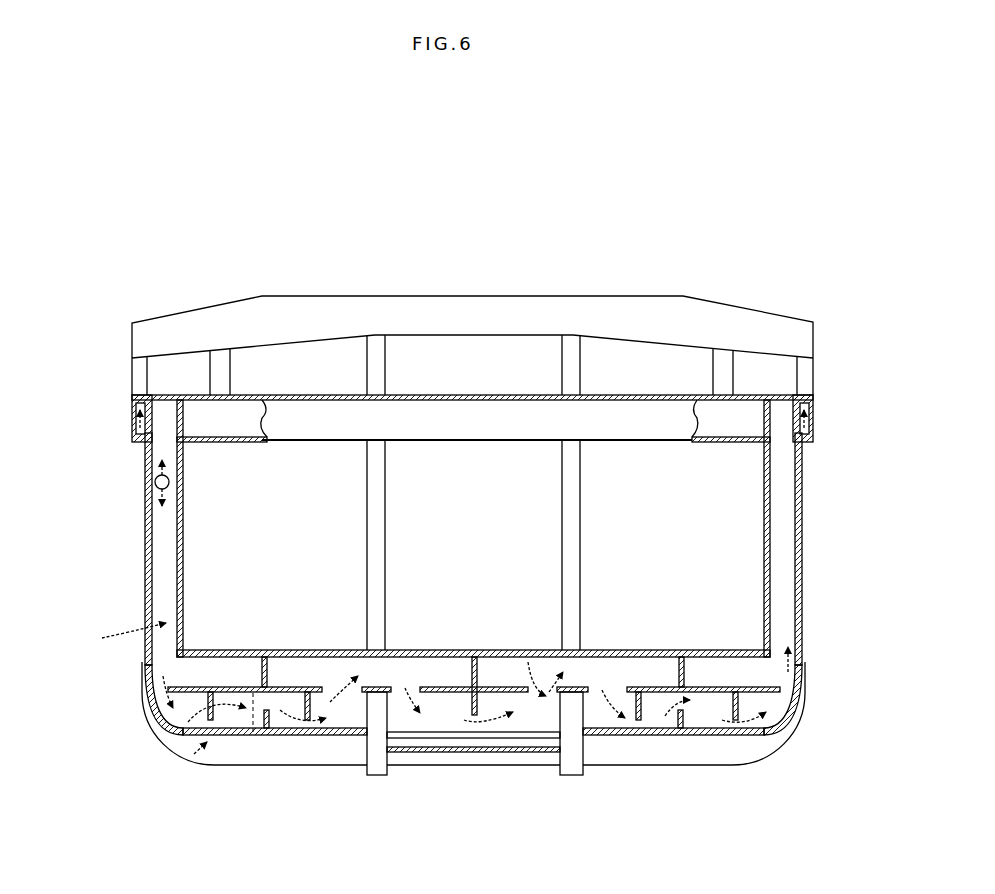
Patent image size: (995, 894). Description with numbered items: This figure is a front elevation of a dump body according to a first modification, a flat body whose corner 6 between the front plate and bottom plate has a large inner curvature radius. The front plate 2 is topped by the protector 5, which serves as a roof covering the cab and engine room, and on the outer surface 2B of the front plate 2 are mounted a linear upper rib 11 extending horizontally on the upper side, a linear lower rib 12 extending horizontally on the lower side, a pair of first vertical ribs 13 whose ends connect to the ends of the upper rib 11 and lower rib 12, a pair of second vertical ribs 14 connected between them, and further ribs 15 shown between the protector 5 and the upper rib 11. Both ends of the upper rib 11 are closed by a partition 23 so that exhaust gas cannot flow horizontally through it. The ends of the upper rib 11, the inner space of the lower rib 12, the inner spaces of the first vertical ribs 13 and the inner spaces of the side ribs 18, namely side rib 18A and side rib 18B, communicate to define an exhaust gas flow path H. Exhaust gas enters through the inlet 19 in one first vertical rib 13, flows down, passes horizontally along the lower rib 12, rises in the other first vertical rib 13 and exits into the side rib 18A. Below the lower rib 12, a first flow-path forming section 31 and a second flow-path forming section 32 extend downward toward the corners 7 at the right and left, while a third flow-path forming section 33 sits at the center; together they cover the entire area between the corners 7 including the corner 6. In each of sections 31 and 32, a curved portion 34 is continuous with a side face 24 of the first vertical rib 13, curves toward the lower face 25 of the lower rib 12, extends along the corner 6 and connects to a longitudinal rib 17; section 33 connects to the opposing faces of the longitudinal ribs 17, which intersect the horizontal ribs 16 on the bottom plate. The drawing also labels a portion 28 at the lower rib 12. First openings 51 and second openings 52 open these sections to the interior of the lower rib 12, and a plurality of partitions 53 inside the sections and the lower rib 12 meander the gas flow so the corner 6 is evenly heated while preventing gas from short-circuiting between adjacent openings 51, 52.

The protector 5 is at (635, 300).
The support pillar 15 is at (133, 372).
The upper rib 11 is at (478, 395).
The partition 23 is at (183, 416).
The side rib 18 is at (115, 421).
The side rib 18A is at (813, 414).
The side rib 18B is at (132, 414).
The front plate 2 is at (518, 528).
The outer surface of the front plate 2B is at (753, 488).
The second vertical rib 14 is at (367, 525).
The first vertical rib 13 is at (145, 550).
The curved portion 34 is at (150, 718).
The side face 24 is at (145, 596).
The exhaust gas flow path H is at (125, 636).
The inlet 19 is at (170, 482).
The corner 7 is at (160, 723).
The corner 6 is at (427, 738).
The third flow-path forming section 33 is at (475, 767).
The longitudinal rib 17 is at (373, 778).
The second opening 52 is at (330, 690).
The partition 53 is at (255, 672).
The first opening 51 is at (422, 688).
The tank bottom 28 is at (300, 650).
The lower rib 12 is at (450, 650).
The first flow-path forming section 31 is at (197, 747).
The lower face 25 is at (253, 736).
The horizontal rib 16 is at (258, 766).
The second flow-path forming section 32 is at (753, 741).